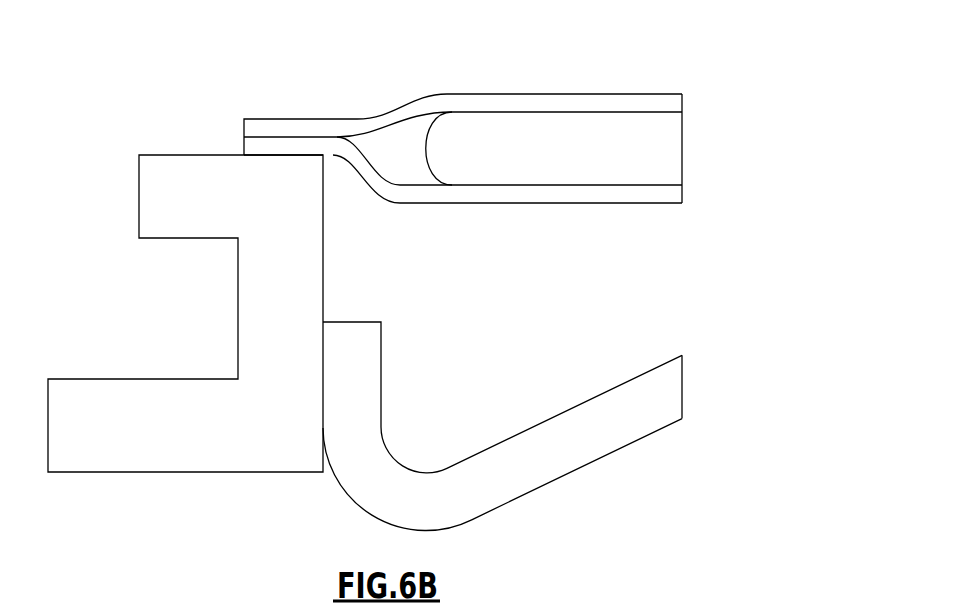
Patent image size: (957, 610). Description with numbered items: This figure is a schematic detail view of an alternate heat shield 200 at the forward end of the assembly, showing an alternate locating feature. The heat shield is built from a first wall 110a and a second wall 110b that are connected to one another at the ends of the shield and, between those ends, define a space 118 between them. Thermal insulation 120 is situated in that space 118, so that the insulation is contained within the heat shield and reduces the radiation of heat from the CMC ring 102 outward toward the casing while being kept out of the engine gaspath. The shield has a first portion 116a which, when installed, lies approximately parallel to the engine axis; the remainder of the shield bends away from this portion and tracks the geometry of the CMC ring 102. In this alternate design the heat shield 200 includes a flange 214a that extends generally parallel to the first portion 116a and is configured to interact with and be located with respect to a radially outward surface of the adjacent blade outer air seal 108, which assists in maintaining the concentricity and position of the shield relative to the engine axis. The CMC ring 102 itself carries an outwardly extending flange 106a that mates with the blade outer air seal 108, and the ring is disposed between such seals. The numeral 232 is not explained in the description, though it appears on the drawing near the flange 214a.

The alternate heat shield 200 is at (683, 60).
The CMC ring 102 is at (520, 462).
The blade outer air seal 108 is at (207, 453).
The flange 106a is at (372, 353).
The first wall 110a is at (578, 100).
The second wall 110b is at (642, 200).
The space 118 is at (594, 155).
The thermal insulation 120 is at (508, 167).
The first portion 116a is at (680, 425).
The flange 214a is at (259, 80).
The flange 232 is at (300, 118).